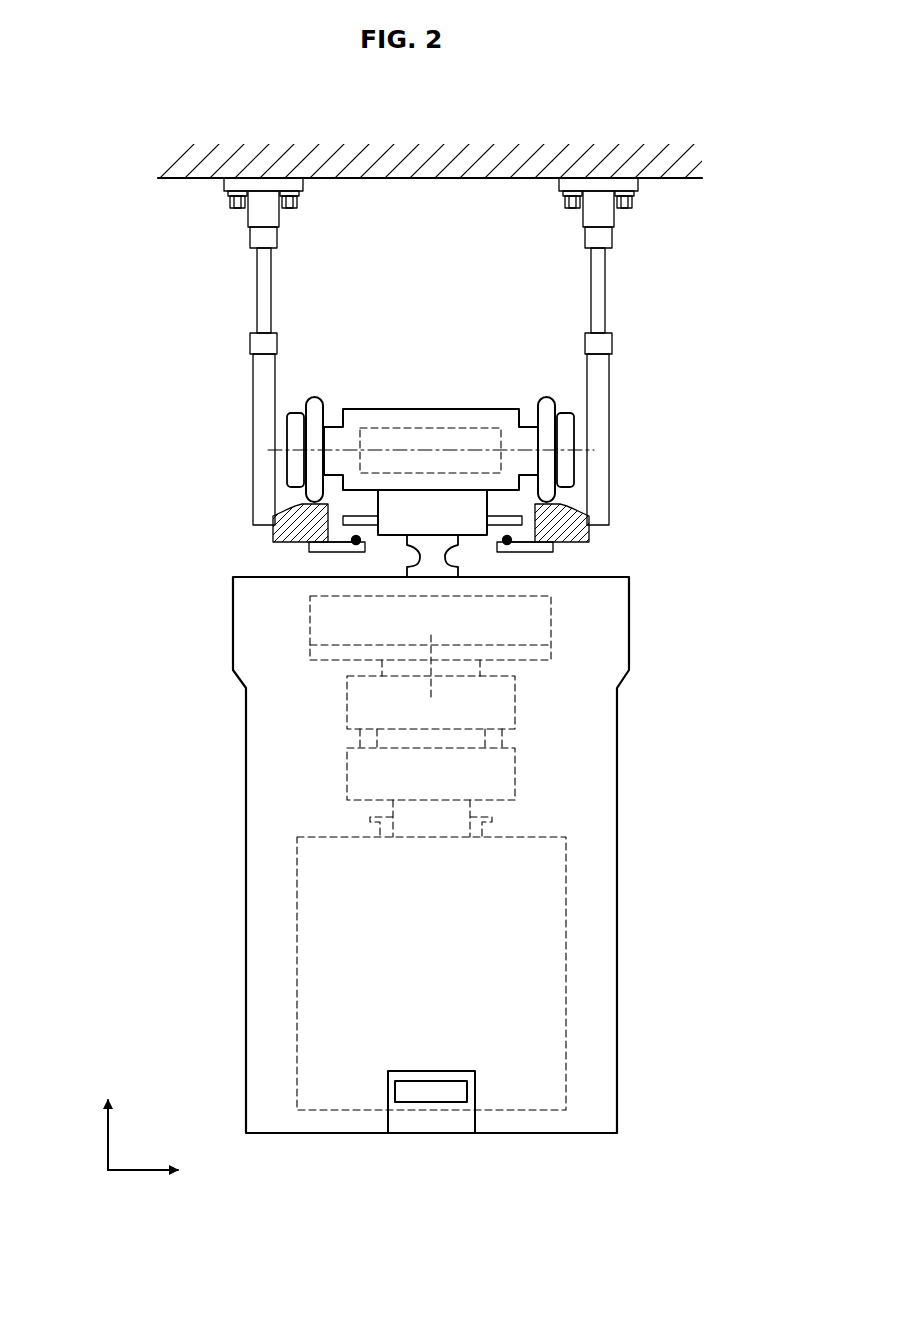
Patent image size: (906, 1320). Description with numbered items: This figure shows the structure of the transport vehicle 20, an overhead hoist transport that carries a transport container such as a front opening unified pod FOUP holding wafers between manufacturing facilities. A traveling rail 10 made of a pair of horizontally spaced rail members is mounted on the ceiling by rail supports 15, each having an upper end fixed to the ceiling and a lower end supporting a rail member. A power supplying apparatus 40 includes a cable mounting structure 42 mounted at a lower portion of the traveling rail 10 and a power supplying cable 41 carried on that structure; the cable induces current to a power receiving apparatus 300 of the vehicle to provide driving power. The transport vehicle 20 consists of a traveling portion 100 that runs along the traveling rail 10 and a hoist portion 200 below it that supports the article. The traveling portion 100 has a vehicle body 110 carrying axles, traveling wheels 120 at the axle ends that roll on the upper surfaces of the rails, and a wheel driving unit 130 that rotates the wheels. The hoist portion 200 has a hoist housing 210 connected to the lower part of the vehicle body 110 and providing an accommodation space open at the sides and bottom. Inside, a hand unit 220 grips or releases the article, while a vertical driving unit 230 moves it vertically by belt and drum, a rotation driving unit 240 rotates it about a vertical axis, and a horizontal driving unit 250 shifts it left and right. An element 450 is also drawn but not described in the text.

The transport vehicle 20 is at (128, 951).
The rail support 15 is at (260, 289).
The traveling rail 10 is at (582, 532).
The power receiving apparatus 300 is at (300, 522).
The traveling portion 100 is at (468, 386).
The vehicle body 110 is at (352, 418).
The traveling wheels 120 is at (306, 400).
The wheel driving unit 130 is at (418, 427).
The power supplying apparatus 40 is at (182, 562).
The power supplying cable 41 is at (355, 545).
The cable mounting structure 42 is at (324, 552).
The hoist portion 200 is at (210, 870).
The hoist housing 210 is at (253, 745).
The hand unit 220 is at (515, 780).
The vertical driving unit 230 is at (515, 695).
The rotation driving unit 240 is at (382, 668).
The horizontal driving unit 250 is at (551, 628).
The sensor 450 is at (388, 1093).
The front opening unified pod FOUP is at (566, 1000).